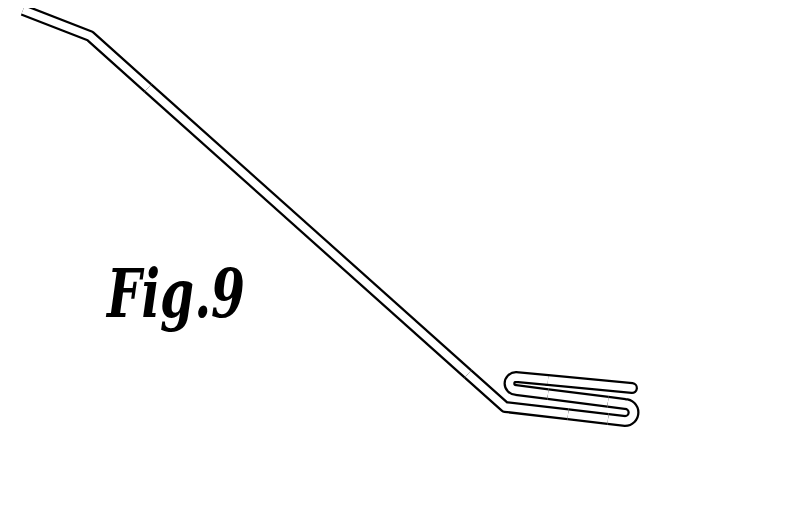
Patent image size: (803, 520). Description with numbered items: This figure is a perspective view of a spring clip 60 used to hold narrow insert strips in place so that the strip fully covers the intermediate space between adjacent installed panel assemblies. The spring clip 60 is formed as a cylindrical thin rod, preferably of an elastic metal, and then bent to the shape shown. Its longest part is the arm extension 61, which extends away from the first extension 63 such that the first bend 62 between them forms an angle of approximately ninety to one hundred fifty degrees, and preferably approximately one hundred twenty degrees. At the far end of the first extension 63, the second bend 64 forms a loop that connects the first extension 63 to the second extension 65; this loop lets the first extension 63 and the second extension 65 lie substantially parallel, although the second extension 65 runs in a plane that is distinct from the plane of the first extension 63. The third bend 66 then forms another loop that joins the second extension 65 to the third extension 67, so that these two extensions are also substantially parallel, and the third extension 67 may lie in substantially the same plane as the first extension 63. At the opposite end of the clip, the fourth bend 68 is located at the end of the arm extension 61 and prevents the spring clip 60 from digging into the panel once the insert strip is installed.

The spring clip 60 is at (361, 245).
The arm extension 61 is at (344, 256).
The first bend 62 is at (497, 409).
The first extension 63 is at (578, 419).
The second bend 64 is at (632, 407).
The second extension 65 is at (601, 389).
The third bend 66 is at (492, 371).
The third extension 67 is at (560, 366).
The fourth bend 68 is at (78, 29).